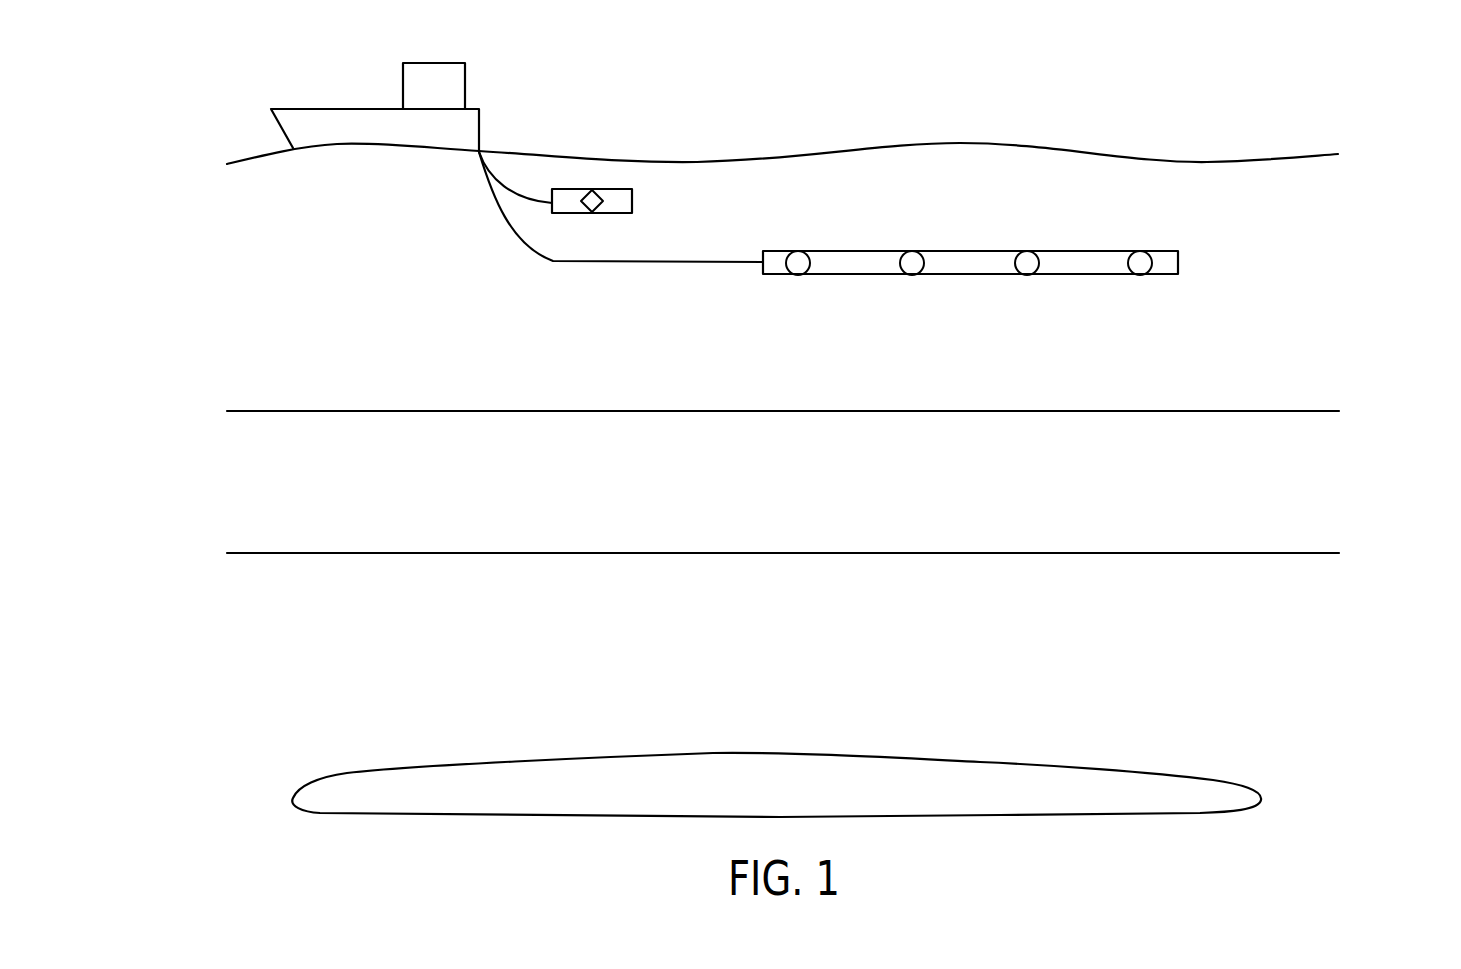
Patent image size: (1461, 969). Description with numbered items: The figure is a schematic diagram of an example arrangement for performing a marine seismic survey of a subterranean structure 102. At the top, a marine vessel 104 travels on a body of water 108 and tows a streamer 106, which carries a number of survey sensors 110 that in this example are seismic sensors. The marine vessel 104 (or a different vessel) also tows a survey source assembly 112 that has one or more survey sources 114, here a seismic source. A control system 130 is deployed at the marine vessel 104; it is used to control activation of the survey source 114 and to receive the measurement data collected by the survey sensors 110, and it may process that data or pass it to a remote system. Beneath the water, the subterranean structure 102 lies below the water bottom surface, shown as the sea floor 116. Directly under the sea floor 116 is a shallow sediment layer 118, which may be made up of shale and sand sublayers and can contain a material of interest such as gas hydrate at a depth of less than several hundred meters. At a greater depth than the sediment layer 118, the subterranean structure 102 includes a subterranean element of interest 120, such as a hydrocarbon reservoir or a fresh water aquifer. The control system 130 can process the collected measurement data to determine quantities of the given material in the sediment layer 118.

The subterranean structure 102 is at (1361, 822).
The marine vessel 104 is at (374, 109).
The streamer 106 is at (1162, 275).
The body of water 108 is at (392, 333).
The survey sensors 110 is at (798, 264).
The survey source assembly 112 is at (618, 197).
The survey source 114 is at (584, 210).
The sea floor 116 is at (955, 411).
The shallow sediment layer 118 is at (217, 400).
The subterranean element of interest 120 is at (992, 798).
The control system 130 is at (465, 88).